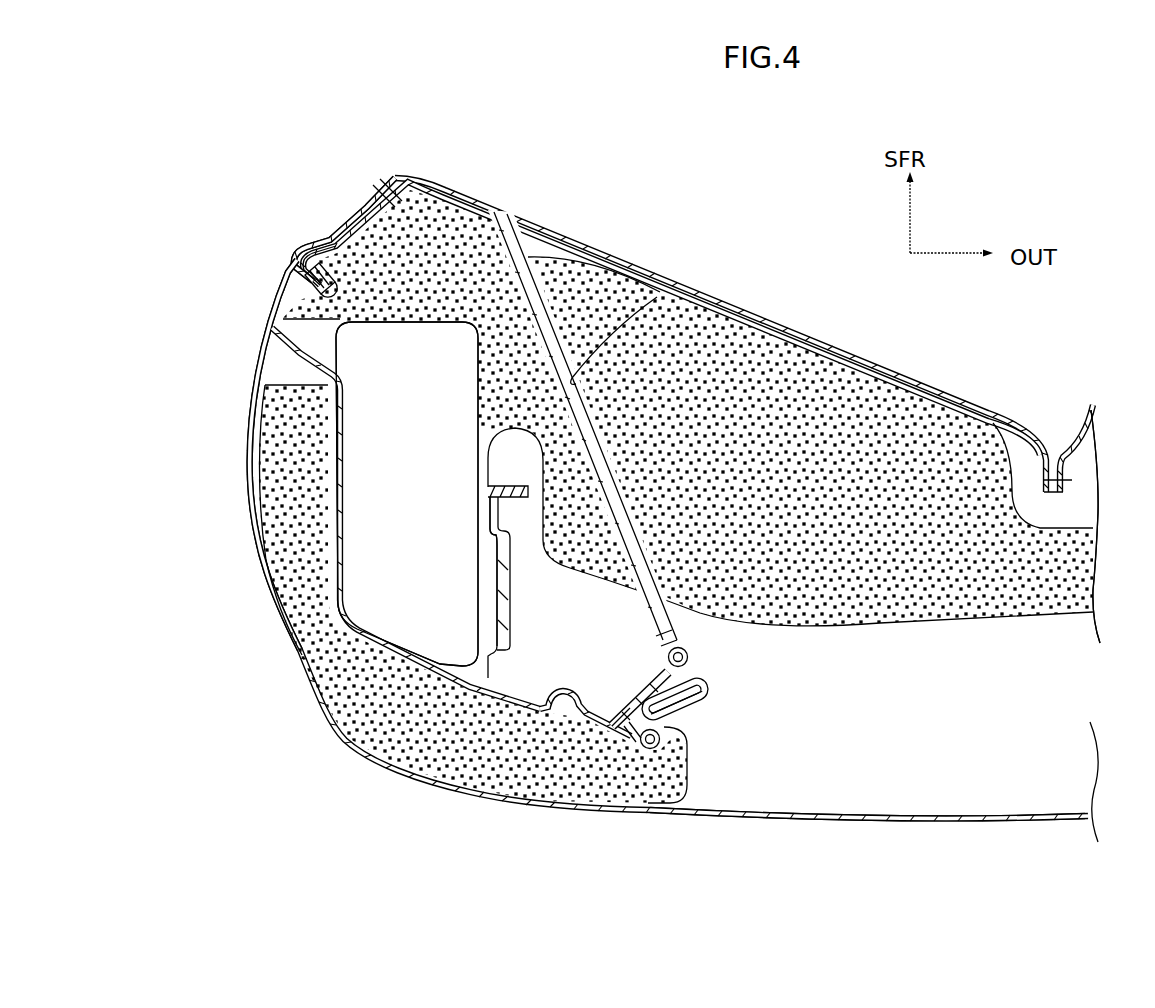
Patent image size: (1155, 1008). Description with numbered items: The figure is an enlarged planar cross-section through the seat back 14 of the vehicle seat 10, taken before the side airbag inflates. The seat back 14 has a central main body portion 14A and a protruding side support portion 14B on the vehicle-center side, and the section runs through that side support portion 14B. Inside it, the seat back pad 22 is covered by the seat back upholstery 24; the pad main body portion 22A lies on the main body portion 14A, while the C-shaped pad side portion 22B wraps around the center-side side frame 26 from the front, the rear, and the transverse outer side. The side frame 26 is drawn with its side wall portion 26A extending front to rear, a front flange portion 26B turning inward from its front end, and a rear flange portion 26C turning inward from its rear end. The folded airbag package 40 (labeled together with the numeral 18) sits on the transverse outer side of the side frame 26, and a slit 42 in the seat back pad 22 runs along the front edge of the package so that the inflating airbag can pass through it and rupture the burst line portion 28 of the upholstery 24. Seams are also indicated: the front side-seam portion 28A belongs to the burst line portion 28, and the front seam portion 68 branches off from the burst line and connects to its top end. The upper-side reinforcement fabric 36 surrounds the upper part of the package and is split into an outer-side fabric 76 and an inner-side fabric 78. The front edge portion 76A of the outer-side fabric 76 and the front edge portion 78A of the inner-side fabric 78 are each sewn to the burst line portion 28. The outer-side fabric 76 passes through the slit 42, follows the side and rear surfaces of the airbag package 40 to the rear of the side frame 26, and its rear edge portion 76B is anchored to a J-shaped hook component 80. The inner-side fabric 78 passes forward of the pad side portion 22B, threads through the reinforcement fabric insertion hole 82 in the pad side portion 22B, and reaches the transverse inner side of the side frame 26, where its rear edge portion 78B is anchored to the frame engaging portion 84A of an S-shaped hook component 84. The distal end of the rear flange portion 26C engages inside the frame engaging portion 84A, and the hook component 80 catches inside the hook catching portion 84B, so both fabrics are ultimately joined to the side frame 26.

The vehicle seat 10 is at (1095, 526).
The seat back 14 is at (824, 193).
The main body portion 14A is at (1045, 386).
The side support portion 14B is at (620, 250).
The airbag module foam 18 is at (688, 428).
The seat back pad 22 is at (880, 624).
The pad main body portion 22A is at (1016, 597).
The pad side portion 22B is at (300, 553).
The seat back upholstery 24 is at (543, 224).
The side frame 26 is at (494, 604).
The side wall portion 26A is at (498, 575).
The front flange portion 26B is at (497, 485).
The rear flange portion 26C is at (560, 700).
The burst line portion 28 is at (344, 229).
The front side-seam portion 28A is at (284, 238).
The upper-side reinforcement fabric 36 is at (275, 455).
The airbag package 40 is at (437, 312).
The slit 42 is at (293, 383).
The front seam portion 68 is at (382, 162).
The outer-side fabric 76 is at (360, 650).
The front edge portion 76A is at (295, 292).
The rear edge portion 76B is at (650, 748).
The inner-side fabric 78 is at (600, 450).
The front edge portion 78A is at (333, 258).
The rear edge portion 78B is at (700, 644).
The hook component 80 is at (710, 700).
The reinforcement fabric insertion hole 82 is at (657, 297).
The hook component 84 is at (655, 658).
The frame engaging portion 84A is at (640, 685).
The hook catching portion 84B is at (693, 707).